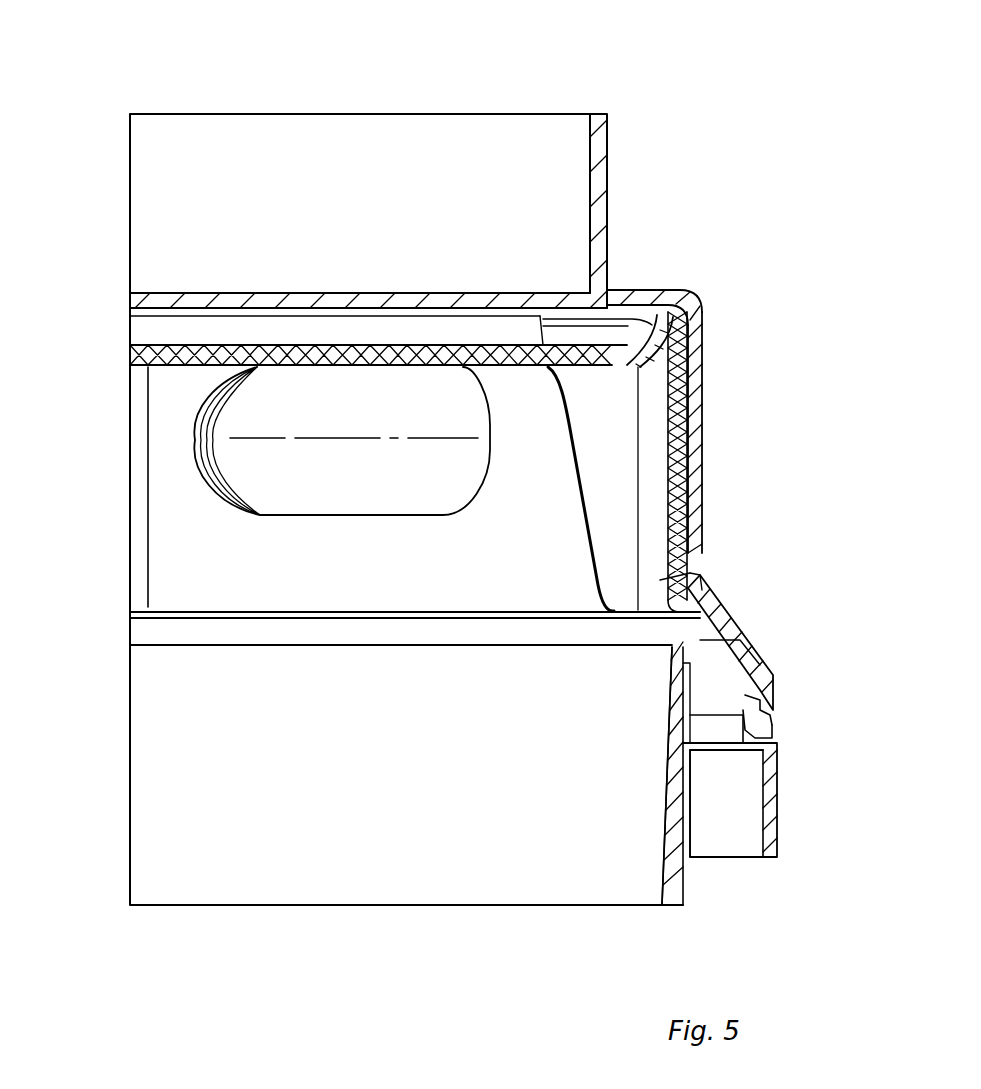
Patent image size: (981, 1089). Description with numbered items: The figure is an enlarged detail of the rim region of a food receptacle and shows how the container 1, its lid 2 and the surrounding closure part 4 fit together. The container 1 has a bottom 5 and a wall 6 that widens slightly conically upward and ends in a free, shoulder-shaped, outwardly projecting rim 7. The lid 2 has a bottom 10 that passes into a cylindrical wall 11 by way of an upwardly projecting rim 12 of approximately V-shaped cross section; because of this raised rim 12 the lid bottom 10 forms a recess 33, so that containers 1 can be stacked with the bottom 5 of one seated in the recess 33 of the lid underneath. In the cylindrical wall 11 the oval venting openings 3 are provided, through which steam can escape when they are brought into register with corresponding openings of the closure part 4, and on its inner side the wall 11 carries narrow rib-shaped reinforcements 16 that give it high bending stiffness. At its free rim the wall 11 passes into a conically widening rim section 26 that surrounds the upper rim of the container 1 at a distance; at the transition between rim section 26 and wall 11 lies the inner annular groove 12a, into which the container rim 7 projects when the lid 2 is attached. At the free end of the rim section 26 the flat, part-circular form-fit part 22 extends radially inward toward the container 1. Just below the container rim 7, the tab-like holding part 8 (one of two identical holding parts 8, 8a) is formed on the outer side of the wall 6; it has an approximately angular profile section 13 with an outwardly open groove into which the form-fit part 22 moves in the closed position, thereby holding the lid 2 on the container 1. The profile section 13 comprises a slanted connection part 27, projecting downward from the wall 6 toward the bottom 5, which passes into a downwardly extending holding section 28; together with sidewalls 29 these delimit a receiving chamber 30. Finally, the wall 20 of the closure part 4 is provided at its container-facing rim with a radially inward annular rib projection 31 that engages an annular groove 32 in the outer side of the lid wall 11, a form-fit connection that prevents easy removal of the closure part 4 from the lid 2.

The container 1 is at (612, 172).
The lid 2 is at (690, 455).
The venting openings 3 is at (330, 480).
The closure part 4 is at (707, 310).
The bottom 5 is at (243, 303).
The wall 6 is at (597, 222).
The rim 7 is at (208, 633).
The holding part 8 is at (780, 755).
The holding part 8a is at (770, 725).
The bottom 10 is at (333, 340).
The cylindrical wall 11 is at (678, 355).
The rim 12 is at (655, 315).
The annular groove 12a is at (708, 592).
The profile section 13 is at (733, 647).
The rib-shaped reinforcements 16 is at (592, 505).
The wall 20 is at (705, 385).
The form-fit part 22 is at (775, 693).
The rim section 26 is at (733, 618).
The connection part 27 is at (735, 720).
The holding section 28 is at (777, 795).
The sidewalls 29 is at (677, 807).
The receiving chamber 30 is at (713, 820).
The annular rib projection 31 is at (680, 565).
The annular groove 32 is at (693, 560).
The recess 33 is at (425, 335).